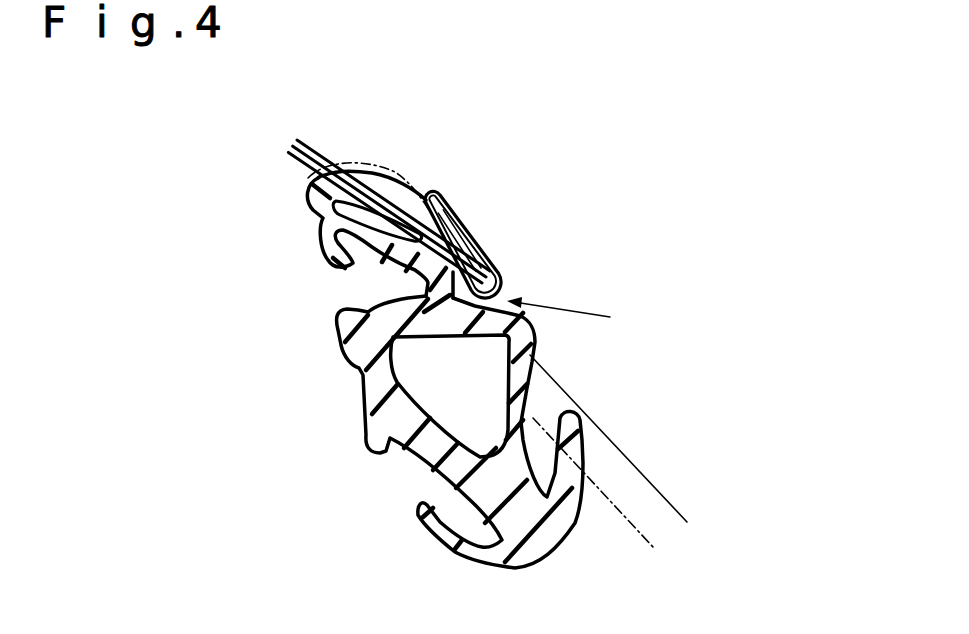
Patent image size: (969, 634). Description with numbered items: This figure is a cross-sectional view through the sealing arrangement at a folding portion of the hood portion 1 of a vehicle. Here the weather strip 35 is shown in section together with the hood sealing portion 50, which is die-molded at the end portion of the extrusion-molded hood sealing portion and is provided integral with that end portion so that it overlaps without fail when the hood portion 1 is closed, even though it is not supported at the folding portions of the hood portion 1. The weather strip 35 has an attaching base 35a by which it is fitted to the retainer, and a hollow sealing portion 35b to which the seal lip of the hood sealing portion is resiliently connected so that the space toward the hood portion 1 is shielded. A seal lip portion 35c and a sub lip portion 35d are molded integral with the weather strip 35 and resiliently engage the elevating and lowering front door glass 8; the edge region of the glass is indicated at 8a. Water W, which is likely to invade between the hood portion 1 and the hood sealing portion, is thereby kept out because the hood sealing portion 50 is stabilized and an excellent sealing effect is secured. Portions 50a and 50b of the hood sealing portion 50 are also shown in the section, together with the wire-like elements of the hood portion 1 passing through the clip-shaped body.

The hood portion 1 is at (313, 157).
The hood sealing portion 50 is at (302, 222).
The wire holding loop of clip 50a is at (467, 225).
The clip body 50b is at (403, 177).
The weather strip 35 is at (558, 356).
The attaching base 35a is at (362, 386).
The hollow sealing portion 35b is at (536, 350).
The seal lip portion 35c is at (579, 417).
The sub lip portion 35d is at (422, 532).
The front door glass 8 is at (657, 490).
The panel edge 8a is at (570, 400).
The water W is at (572, 311).